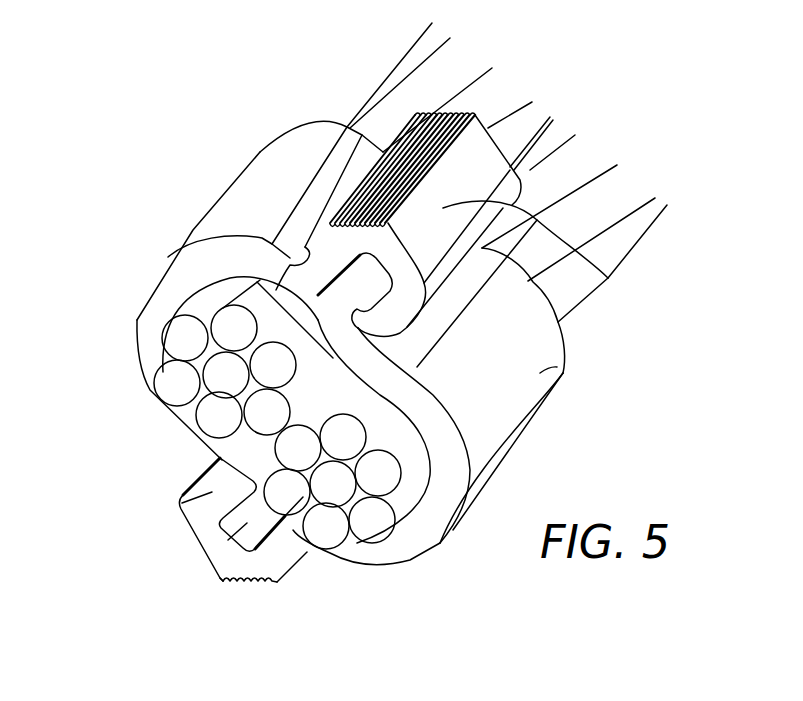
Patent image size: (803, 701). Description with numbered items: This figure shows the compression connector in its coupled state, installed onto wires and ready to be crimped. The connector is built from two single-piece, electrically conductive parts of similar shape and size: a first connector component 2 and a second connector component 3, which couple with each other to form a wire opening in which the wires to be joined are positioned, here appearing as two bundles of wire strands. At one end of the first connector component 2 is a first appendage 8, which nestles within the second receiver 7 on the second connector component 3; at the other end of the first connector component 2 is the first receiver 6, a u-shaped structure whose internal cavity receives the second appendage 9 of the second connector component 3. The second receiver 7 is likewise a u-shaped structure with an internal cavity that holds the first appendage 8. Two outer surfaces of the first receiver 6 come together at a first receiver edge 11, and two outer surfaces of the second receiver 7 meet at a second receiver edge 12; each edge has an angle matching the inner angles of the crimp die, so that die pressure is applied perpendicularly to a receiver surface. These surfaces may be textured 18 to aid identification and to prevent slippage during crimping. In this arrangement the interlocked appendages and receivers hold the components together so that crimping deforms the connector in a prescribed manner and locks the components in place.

The first connector component 2 is at (205, 216).
The second connector component 3 is at (557, 367).
The first receiver 6 is at (590, 258).
The second receiver 7 is at (182, 503).
The first appendage 8 is at (228, 540).
The second appendage 9 is at (362, 287).
The first receiver edge 11 is at (453, 148).
The second receiver edge 12 is at (213, 592).
The textured surfaces 18 is at (416, 115).